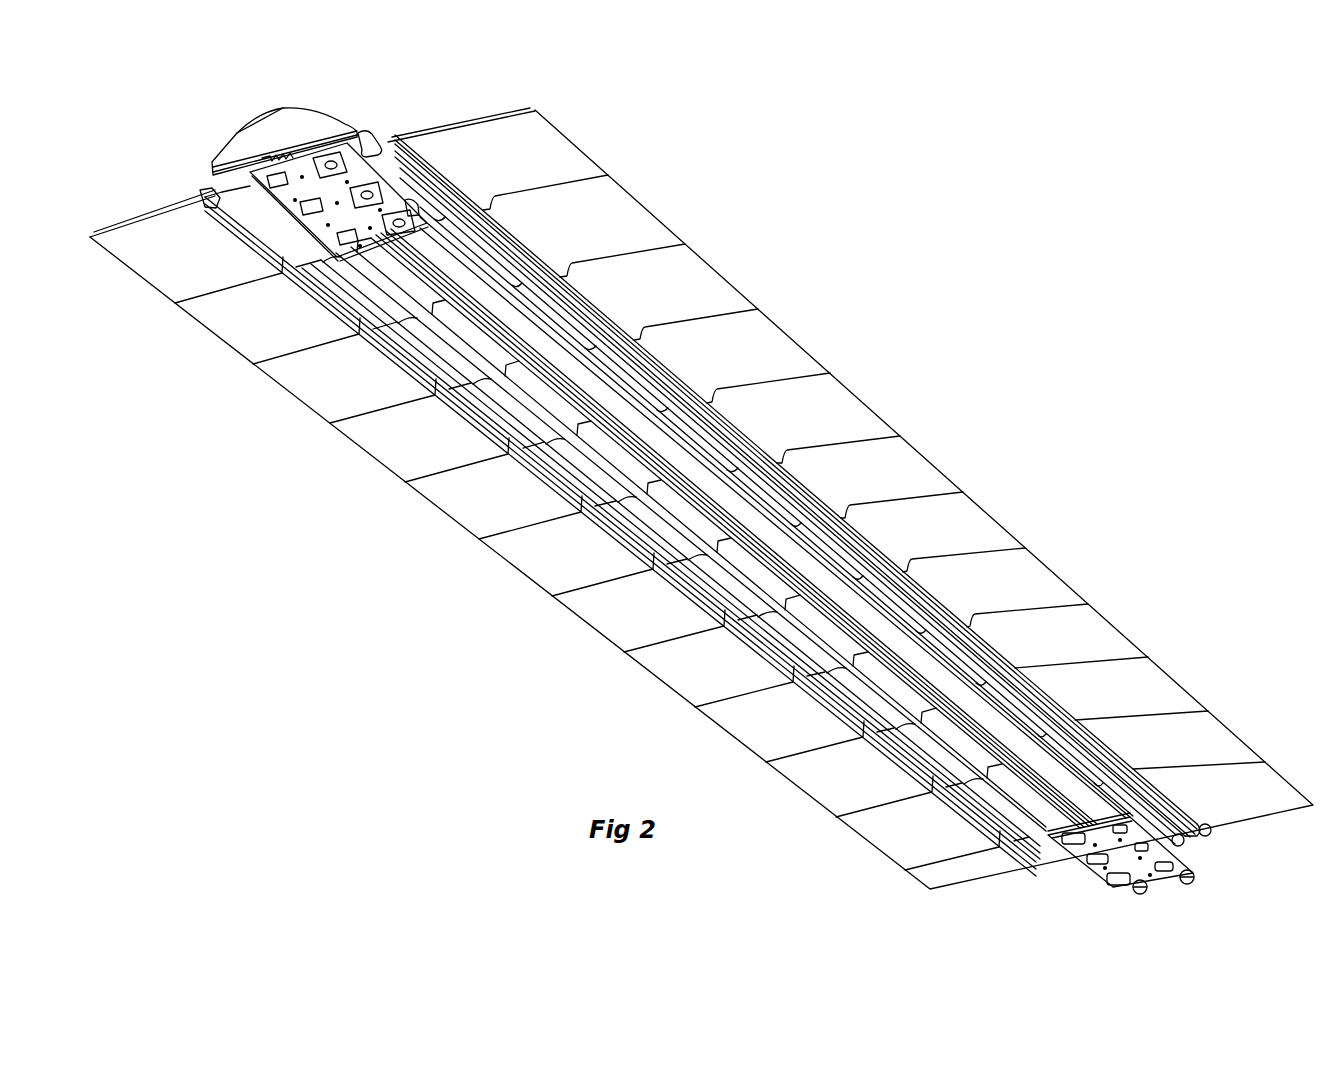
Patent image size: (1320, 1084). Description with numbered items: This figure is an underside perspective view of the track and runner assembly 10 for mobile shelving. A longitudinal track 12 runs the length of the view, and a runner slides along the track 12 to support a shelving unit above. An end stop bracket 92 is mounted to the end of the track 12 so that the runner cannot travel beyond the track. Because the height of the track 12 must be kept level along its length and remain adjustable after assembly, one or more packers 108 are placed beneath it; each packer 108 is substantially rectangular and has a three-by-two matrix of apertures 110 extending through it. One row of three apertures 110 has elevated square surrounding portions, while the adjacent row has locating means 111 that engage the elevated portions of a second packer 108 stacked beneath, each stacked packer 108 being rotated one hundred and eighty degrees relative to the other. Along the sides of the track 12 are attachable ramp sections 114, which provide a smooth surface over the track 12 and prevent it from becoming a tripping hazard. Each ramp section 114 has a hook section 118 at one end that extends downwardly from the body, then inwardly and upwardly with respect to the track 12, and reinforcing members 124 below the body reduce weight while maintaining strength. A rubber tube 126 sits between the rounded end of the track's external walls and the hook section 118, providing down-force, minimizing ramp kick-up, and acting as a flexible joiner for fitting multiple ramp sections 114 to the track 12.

The track and runner assembly 10 is at (950, 328).
The longitudinal track 12 is at (690, 470).
The end stop bracket 92 is at (300, 112).
The packer 108 is at (313, 225).
The aperture 110 is at (343, 243).
The locating means 111 is at (1090, 868).
The ramp section 114 is at (908, 469).
The hook section 118 is at (990, 669).
The reinforcing member 124 is at (208, 196).
The rubber tube 126 is at (380, 137).